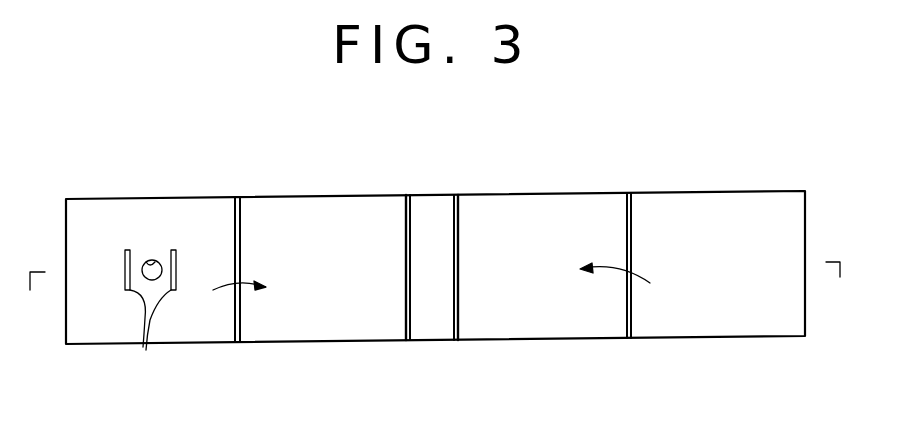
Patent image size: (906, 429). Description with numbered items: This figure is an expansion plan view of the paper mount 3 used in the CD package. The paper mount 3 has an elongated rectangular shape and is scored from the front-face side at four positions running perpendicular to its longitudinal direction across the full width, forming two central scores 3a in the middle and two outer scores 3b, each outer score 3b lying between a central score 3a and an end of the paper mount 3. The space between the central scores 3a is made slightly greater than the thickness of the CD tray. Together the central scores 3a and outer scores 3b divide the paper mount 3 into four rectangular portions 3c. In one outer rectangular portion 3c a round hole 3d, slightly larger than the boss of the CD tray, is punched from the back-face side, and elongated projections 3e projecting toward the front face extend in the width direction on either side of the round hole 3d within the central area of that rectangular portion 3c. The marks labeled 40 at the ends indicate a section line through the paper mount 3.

The paper mount 3 is at (534, 190).
The central score 3a is at (449, 222).
The outer score 3b is at (241, 227).
The rectangular portion 3c is at (207, 332).
The round hole 3d is at (150, 260).
The elongated projection 3e is at (143, 347).
The section line 40 is at (432, 295).